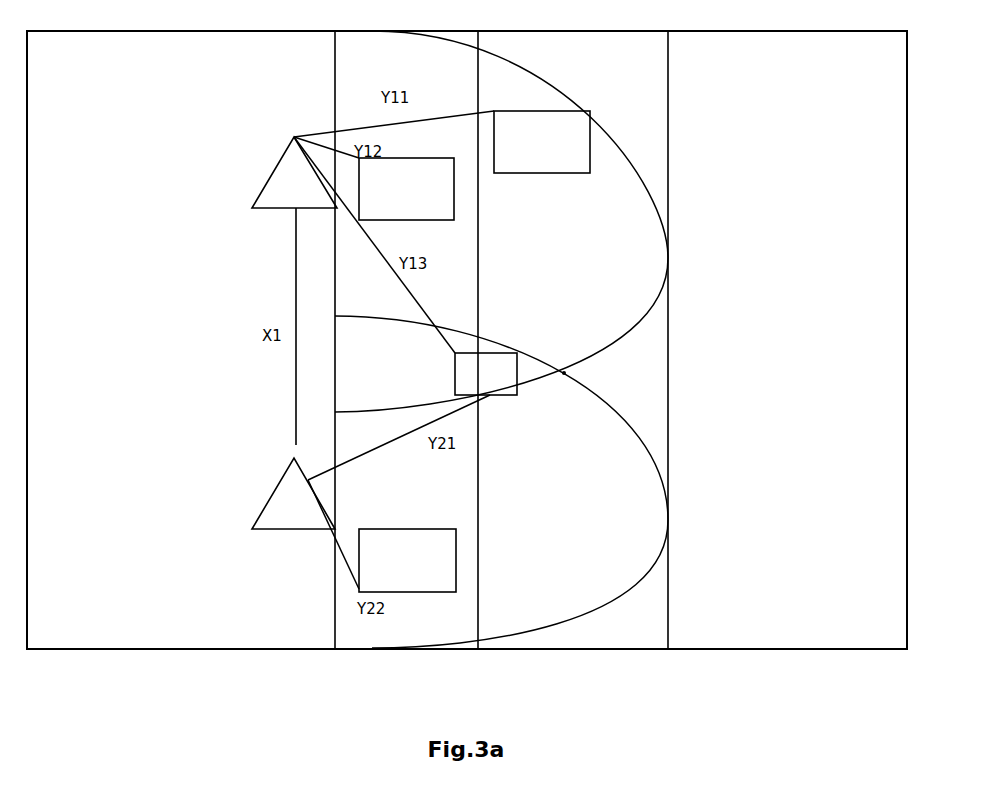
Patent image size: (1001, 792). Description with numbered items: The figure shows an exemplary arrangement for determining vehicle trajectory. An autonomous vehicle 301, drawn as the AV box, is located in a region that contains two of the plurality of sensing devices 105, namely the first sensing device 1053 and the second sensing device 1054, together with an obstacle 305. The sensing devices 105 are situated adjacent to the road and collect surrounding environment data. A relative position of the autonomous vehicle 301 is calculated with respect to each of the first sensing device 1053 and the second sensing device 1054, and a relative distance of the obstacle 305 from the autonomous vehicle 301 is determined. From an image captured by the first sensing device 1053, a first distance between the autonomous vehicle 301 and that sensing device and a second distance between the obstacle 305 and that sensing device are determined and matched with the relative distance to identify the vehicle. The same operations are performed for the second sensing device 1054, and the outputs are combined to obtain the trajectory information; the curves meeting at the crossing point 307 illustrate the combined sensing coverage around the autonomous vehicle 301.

The plurality of sensing devices 105 is at (193, 345).
The sensing device S1 1053 is at (256, 172).
The sensing device S2 1054 is at (258, 500).
The autonomous vehicle 301 is at (505, 352).
The obstacle 305 is at (407, 560).
The intersection point of curves 307 is at (566, 374).